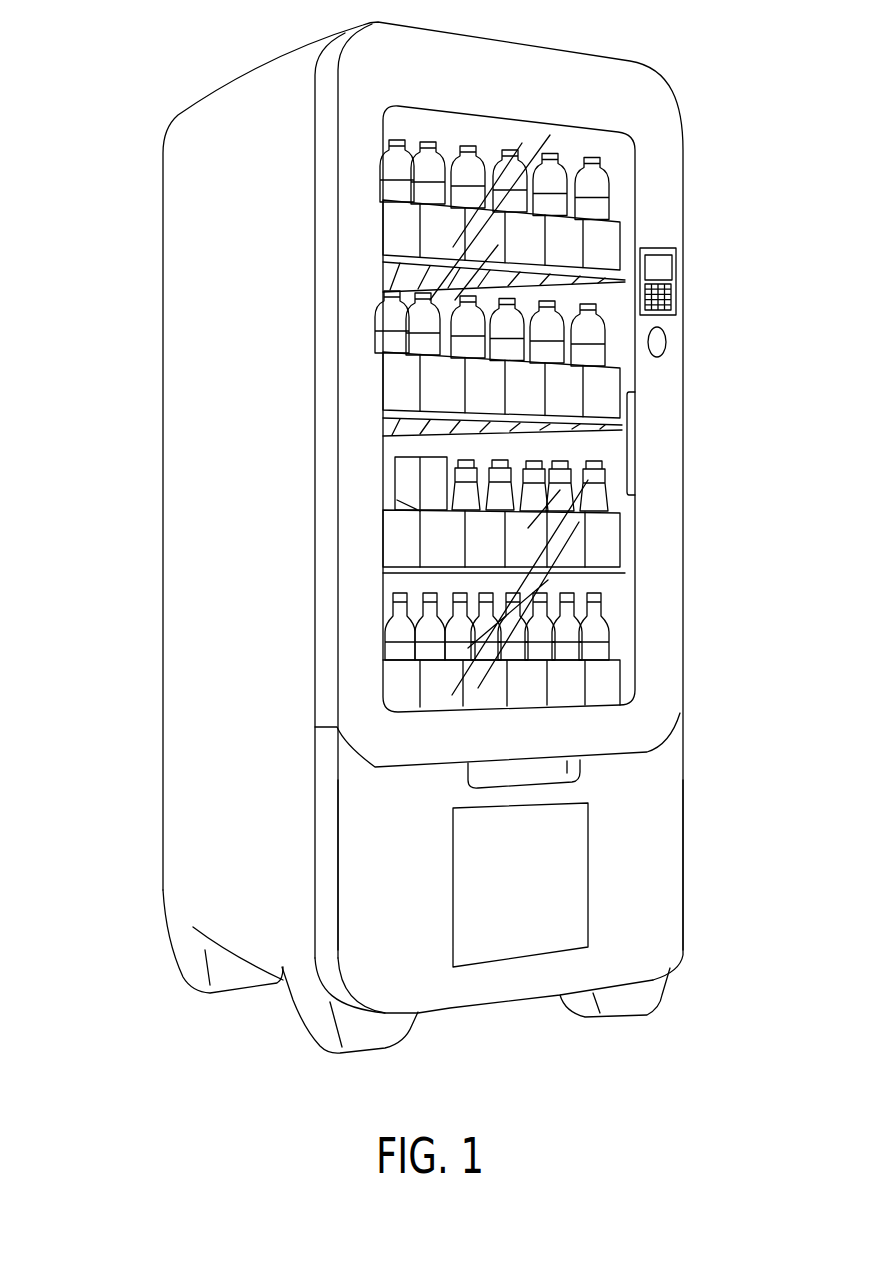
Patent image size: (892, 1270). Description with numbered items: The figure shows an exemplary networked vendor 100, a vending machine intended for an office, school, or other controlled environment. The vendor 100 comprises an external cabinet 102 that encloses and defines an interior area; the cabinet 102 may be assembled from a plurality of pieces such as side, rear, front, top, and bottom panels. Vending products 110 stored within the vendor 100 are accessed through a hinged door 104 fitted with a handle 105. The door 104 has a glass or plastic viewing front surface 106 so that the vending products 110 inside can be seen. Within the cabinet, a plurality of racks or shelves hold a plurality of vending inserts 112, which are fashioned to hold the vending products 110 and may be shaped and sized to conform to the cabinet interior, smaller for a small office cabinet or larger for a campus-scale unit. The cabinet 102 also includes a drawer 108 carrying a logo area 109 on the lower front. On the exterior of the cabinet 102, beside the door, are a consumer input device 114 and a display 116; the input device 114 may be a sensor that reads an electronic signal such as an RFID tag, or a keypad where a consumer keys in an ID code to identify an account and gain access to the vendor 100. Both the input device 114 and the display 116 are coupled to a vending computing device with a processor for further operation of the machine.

The networked vendor 100 is at (140, 86).
The external cabinet 102 is at (182, 800).
The hinged door 104 is at (655, 703).
The handle 105 is at (632, 438).
The viewing front surface 106 is at (412, 586).
The drawer 108 is at (667, 868).
The logo area 109 is at (578, 918).
The vending products 110 is at (606, 480).
The vending inserts 112 is at (611, 538).
The consumer input device 114 is at (666, 342).
The display 116 is at (682, 273).